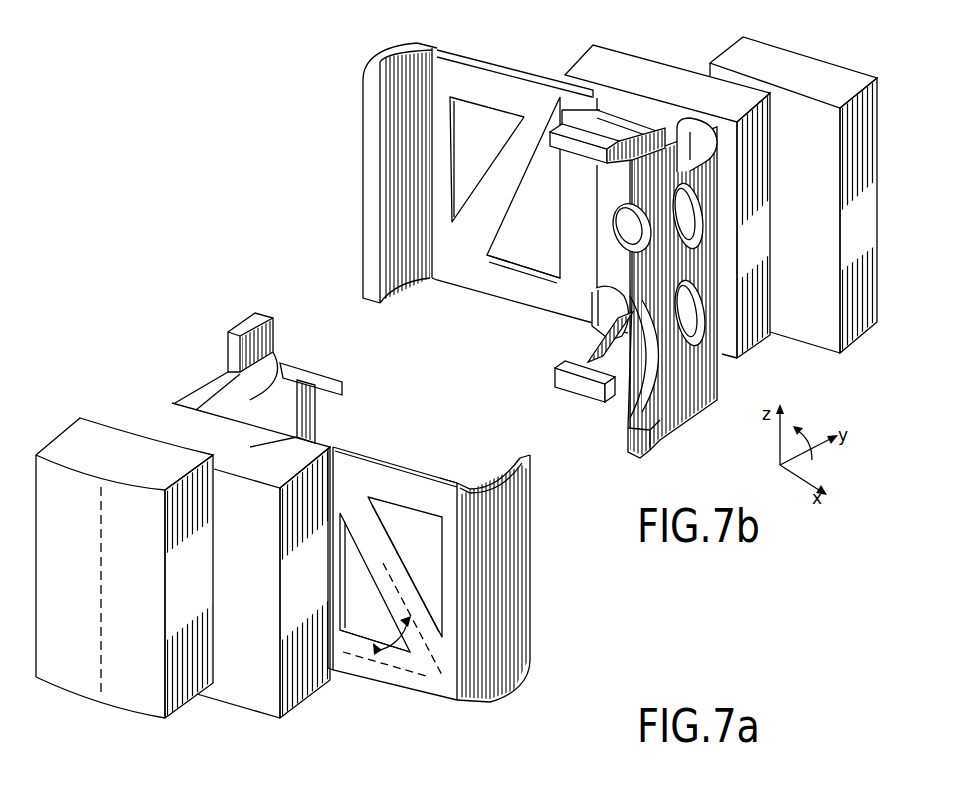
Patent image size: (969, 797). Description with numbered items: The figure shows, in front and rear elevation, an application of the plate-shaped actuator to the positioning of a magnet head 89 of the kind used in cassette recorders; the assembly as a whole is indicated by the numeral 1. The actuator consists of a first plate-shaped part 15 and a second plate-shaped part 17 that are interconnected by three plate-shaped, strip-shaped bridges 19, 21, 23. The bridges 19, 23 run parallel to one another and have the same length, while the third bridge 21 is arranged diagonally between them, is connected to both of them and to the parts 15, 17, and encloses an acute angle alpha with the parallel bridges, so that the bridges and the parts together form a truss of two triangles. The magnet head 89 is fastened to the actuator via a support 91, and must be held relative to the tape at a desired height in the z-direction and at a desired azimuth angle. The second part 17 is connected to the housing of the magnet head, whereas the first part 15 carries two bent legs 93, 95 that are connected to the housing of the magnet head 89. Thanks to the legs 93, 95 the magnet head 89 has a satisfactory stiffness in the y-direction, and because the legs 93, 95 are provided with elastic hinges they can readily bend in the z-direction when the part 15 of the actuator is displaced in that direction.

In FIG. 7a, the holding assembly 1 is at (446, 455).
In FIG. 7b, the first plate-shaped part 15 is at (582, 267).
In FIG. 7b, the second plate-shaped part 17 is at (395, 62).
In FIG. 7a, the second plate-shaped part 17 is at (500, 648).
In FIG. 7b, the bridge 19 is at (493, 85).
In FIG. 7a, the bridge 19 is at (385, 483).
In FIG. 7b, the third bridge 21 is at (508, 173).
In FIG. 7a, the third bridge 21 is at (417, 640).
In FIG. 7b, the bridge 23 is at (492, 281).
In FIG. 7a, the bridge 23 is at (383, 671).
In FIG. 7a, the magnet head 89 is at (63, 500).
In FIG. 7a, the support 91 is at (242, 682).
In FIG. 7b, the bent leg 93 is at (589, 390).
In FIG. 7b, the bent leg 95 is at (569, 147).